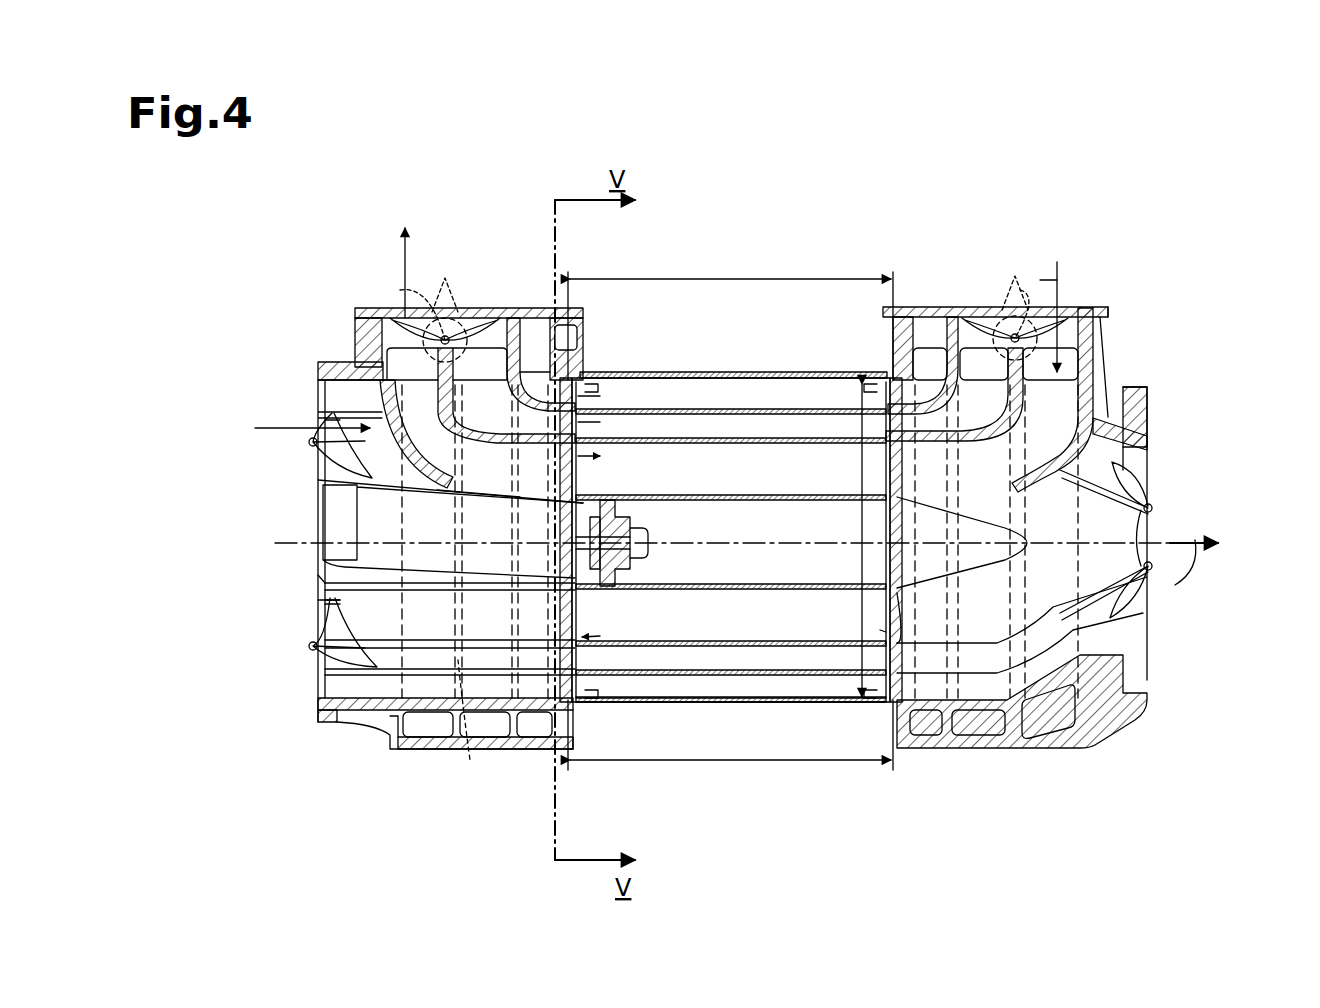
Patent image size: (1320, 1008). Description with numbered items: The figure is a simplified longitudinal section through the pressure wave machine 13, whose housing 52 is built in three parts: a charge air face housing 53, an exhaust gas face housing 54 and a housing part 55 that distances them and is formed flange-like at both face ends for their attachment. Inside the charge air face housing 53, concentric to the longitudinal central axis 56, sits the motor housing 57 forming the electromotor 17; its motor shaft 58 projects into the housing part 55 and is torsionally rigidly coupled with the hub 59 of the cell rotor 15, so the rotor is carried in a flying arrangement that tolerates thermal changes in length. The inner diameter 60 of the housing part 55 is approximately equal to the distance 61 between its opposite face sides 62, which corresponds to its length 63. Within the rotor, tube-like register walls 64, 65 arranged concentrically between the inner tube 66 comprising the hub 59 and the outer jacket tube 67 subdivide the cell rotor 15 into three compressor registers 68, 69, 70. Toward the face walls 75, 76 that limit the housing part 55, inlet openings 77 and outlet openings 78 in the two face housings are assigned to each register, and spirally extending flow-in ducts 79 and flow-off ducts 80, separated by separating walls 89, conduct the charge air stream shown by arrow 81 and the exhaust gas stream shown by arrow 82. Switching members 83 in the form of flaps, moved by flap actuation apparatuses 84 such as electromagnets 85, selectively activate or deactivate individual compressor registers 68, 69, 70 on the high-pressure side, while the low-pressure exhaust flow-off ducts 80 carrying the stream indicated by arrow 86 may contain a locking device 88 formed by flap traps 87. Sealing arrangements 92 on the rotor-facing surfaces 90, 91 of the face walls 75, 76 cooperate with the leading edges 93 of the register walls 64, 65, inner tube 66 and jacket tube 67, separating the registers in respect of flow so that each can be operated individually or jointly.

The pressure wave machine 13 is at (748, 163).
The cell rotor 15 is at (712, 705).
The electromotor 17 is at (318, 580).
The housing 52 is at (798, 213).
The charge air face housing 53 is at (345, 730).
The exhaust gas face housing 54 is at (1070, 735).
The housing part 55 is at (690, 705).
The longitudinal central axis 56 is at (280, 538).
The motor housing 57 is at (318, 660).
The motor shaft 58 is at (646, 553).
The hub 59 is at (632, 530).
The inner diameter 60 is at (852, 432).
The distance 61 is at (627, 278).
The face sides 62 is at (562, 750).
The length 63 is at (640, 770).
The register wall 64 is at (763, 700).
The register wall 65 is at (820, 700).
The inner tube 66 is at (755, 497).
The jacket tube 67 is at (640, 378).
The compressor register 68 is at (598, 456).
The compressor register 69 is at (522, 428).
The compressor register 70 is at (552, 392).
The face wall 75 is at (545, 496).
The face wall 76 is at (900, 620).
The inlet opening 77 is at (905, 462).
The outlet opening 78 is at (595, 490).
The flow-in duct 79 is at (305, 652).
The flow-off duct 80 is at (392, 290).
The arrow 81 is at (410, 272).
The arrow 82 is at (1065, 278).
The switching member 83 is at (462, 270).
The flap actuation apparatus 84 is at (435, 270).
The electromagnet 85 is at (455, 295).
The arrow 86 is at (1195, 535).
The flap trap 87 is at (1180, 570).
The locking device 88 is at (1170, 640).
The separating wall 89 is at (478, 731).
The surface 90 is at (582, 458).
The surface 91 is at (885, 630).
The sealing arrangement 92 is at (592, 635).
The leading edge 93 is at (577, 640).